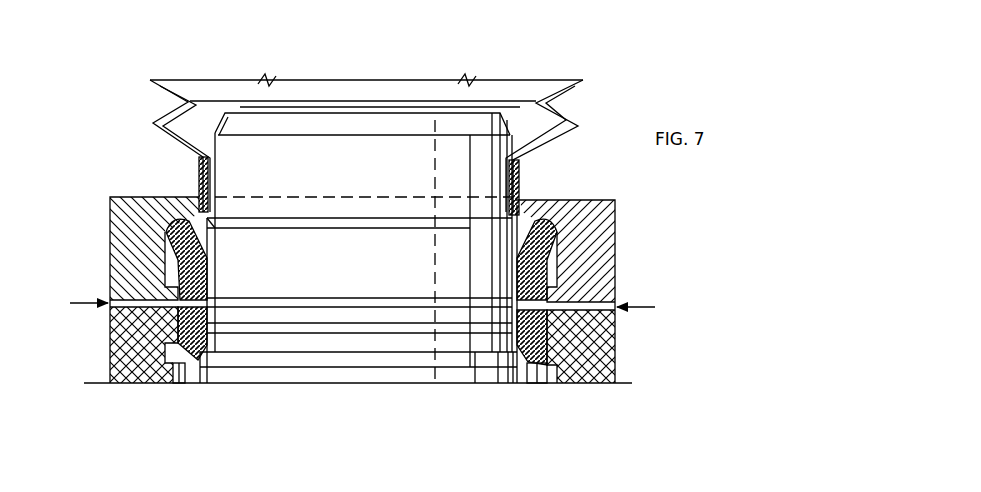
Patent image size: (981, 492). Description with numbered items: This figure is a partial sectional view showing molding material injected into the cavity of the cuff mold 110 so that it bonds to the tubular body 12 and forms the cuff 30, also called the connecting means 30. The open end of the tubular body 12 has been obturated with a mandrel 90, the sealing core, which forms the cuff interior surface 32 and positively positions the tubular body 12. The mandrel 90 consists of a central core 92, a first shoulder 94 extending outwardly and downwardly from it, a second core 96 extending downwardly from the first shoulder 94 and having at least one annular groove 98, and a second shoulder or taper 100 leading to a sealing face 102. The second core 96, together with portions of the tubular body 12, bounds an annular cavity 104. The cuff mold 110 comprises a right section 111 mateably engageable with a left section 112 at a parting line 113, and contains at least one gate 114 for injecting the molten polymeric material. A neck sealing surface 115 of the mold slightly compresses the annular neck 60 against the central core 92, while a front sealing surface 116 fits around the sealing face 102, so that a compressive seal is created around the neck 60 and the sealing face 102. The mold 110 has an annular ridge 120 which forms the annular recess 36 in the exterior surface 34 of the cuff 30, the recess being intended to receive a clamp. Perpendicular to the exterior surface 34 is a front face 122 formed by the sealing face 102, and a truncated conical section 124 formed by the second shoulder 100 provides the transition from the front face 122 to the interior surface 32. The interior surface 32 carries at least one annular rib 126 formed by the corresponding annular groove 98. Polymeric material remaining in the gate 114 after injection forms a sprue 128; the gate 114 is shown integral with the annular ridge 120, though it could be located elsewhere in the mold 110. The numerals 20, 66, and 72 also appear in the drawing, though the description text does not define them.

The tubular body 12 is at (584, 112).
The diaphragm 20 is at (152, 119).
The connecting means 30 is at (160, 250).
The interior surface 32 is at (517, 287).
The exterior surface 34 is at (562, 262).
The annular recess 36 is at (102, 382).
The annular neck 60 is at (200, 167).
The right sealing lip 66 is at (527, 213).
The rounded seal end 72 is at (552, 240).
The mandrel 90 is at (377, 123).
The central core 92 is at (363, 248).
The first shoulder 94 is at (317, 220).
The second core 96 is at (356, 300).
The annular groove 98 is at (288, 328).
The second shoulder 100 is at (313, 357).
The sealing face 102 is at (413, 377).
The annular cavity 104 is at (527, 248).
The cuff mold 110 is at (618, 205).
The right section 111 is at (580, 377).
The left section 112 is at (134, 380).
The parting line 113 is at (358, 383).
The gate 114 is at (116, 327).
The neck sealing surface 115 is at (215, 198).
The front sealing surface 116 is at (185, 376).
The annular ridge 120 is at (550, 343).
The front face 122 is at (173, 383).
The truncated conical section 124 is at (523, 367).
The annular rib 126 is at (212, 297).
The sprue 128 is at (110, 297).